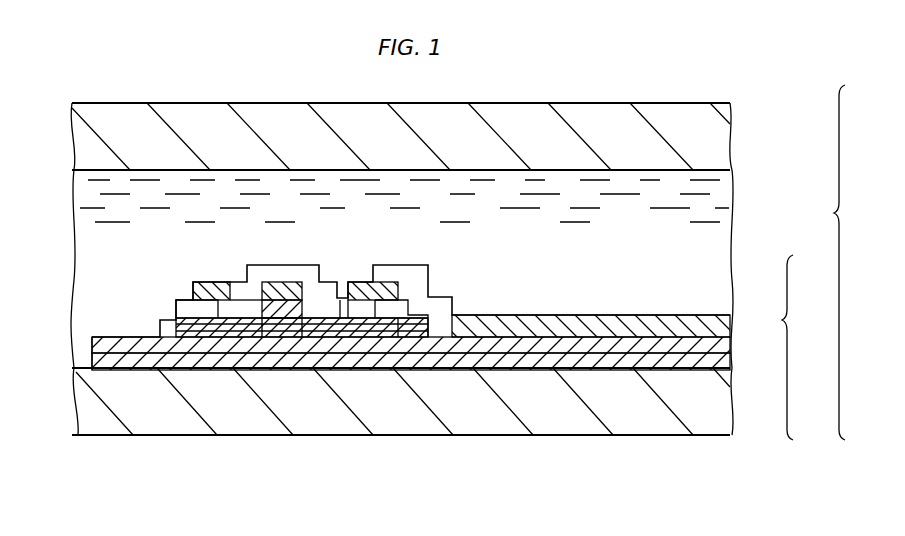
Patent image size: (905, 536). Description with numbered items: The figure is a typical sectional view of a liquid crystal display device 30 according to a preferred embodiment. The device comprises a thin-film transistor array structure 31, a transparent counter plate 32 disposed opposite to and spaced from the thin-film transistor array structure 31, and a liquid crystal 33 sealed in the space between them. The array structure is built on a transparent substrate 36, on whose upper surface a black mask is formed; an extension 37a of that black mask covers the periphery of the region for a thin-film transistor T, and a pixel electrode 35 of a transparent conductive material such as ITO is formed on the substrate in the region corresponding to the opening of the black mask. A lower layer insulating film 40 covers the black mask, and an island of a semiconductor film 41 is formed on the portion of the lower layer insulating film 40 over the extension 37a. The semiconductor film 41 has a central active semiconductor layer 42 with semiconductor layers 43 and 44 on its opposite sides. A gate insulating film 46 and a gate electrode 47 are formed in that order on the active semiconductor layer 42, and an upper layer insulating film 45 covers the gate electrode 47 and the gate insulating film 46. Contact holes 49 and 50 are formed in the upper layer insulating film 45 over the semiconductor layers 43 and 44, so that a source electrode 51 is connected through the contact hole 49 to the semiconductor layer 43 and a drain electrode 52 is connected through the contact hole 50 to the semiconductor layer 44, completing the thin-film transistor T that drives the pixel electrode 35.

The liquid crystal display device 30 is at (855, 262).
The thin-film transistor array structure 31 is at (804, 347).
The transparent counter plate 32 is at (715, 141).
The liquid crystal 33 is at (705, 211).
The pixel electrode 35 is at (600, 322).
The transparent substrate 36 is at (566, 428).
The extension 37a is at (187, 360).
The lower layer insulating film 40 is at (97, 357).
The semiconductor film 41 is at (302, 416).
The active semiconductor layer 42 is at (282, 306).
The semiconductor layer 43 is at (262, 326).
The semiconductor layer 44 is at (304, 302).
The upper layer insulating film 45 is at (182, 300).
The gate insulating film 46 is at (320, 302).
The gate electrode 47 is at (295, 296).
The contact hole 49 is at (205, 308).
The contact hole 50 is at (366, 292).
The source electrode 51 is at (207, 282).
The drain electrode 52 is at (386, 300).
The thin-film transistor T is at (352, 264).